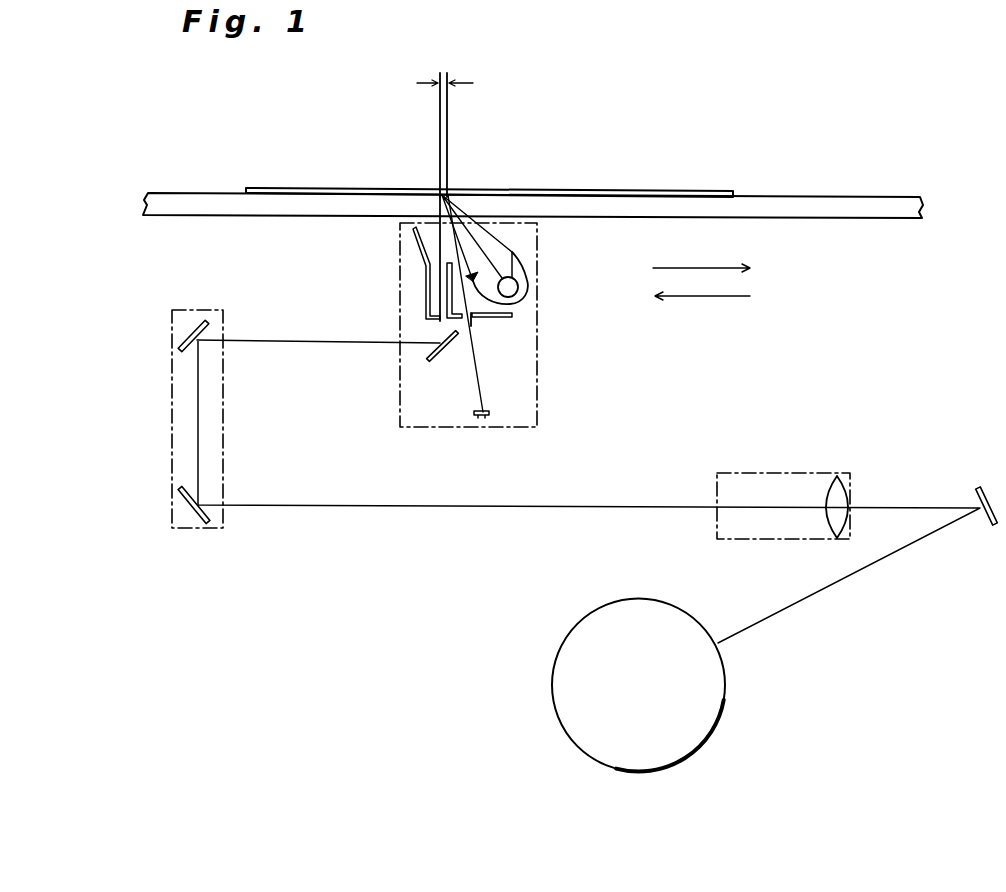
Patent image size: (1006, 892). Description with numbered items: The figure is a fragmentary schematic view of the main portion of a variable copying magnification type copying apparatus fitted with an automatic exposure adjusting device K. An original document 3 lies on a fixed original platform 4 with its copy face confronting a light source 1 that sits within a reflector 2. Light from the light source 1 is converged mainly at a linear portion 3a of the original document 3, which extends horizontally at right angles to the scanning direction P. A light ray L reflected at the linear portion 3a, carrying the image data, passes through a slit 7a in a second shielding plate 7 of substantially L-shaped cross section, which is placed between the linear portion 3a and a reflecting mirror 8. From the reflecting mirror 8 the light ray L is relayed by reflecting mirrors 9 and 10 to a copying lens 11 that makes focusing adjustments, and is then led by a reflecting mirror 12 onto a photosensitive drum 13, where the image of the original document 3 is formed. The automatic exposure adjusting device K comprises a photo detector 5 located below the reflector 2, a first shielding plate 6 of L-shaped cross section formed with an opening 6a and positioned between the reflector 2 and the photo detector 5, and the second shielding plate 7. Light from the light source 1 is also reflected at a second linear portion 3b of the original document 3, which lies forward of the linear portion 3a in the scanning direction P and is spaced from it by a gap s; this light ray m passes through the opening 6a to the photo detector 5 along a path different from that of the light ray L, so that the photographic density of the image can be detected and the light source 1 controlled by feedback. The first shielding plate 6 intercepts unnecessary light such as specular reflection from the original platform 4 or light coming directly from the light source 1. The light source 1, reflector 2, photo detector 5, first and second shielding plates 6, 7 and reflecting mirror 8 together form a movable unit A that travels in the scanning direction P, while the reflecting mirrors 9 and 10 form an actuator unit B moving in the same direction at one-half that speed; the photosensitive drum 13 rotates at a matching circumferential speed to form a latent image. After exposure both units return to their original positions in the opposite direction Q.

The light source 1 is at (525, 281).
The reflector 2 is at (529, 301).
The original document 3 is at (587, 190).
The linear portion 3a is at (440, 192).
The linear portion 3b is at (452, 188).
The original platform 4 is at (813, 200).
The photo detector 5 is at (489, 414).
The first shielding plate 6 is at (512, 318).
The opening 6a is at (471, 325).
The second shielding plate 7 is at (426, 293).
The slit 7a is at (440, 323).
The reflecting mirror 8 is at (428, 360).
The reflecting mirror 9 is at (207, 325).
The reflecting mirror 10 is at (192, 513).
The copying lens 11 is at (838, 480).
The reflecting mirror 12 is at (973, 483).
The photosensitive drum 13 is at (712, 735).
The movable unit A is at (525, 430).
The actuator unit B is at (173, 347).
The light ray L is at (292, 340).
The automatic exposure adjusting device K is at (420, 263).
The light ray m is at (475, 367).
The gap s is at (445, 63).
The scanning direction P is at (701, 254).
The direction Q is at (702, 313).